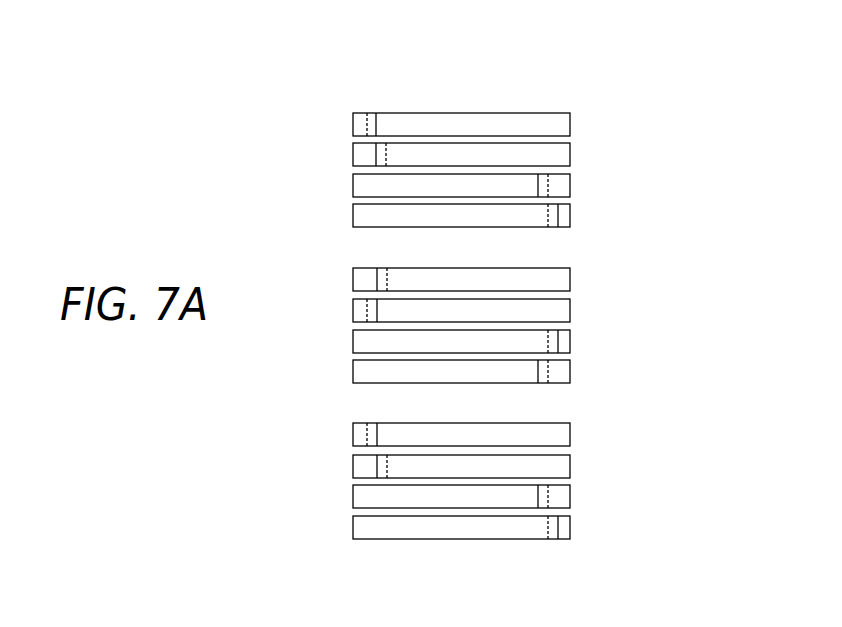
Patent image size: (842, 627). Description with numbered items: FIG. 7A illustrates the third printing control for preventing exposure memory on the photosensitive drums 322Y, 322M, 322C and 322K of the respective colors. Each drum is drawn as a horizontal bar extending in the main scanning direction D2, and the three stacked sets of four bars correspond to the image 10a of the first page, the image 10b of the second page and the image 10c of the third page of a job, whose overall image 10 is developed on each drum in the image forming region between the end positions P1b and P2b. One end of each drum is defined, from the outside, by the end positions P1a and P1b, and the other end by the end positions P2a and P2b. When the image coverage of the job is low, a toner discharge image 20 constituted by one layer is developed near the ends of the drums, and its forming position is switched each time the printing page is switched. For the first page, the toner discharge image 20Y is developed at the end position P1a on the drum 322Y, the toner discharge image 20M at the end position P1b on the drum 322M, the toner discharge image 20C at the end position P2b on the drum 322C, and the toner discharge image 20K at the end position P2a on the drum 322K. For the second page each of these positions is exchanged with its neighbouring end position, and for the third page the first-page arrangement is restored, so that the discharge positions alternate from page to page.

The image 10 is at (559, 326).
The image of the first page 10a is at (678, 108).
The image of the second page 10b is at (678, 267).
The image of the third page 10c is at (678, 417).
The toner discharge image 20 is at (512, 216).
The toner discharge image of the Y color 20Y is at (372, 124).
The toner discharge image of the M color 20M is at (374, 155).
The toner discharge image of the C color 20C is at (545, 186).
The toner discharge image of the K color 20K is at (548, 216).
The photosensitive drum of the Y color 322Y is at (465, 280).
The photosensitive drum of the M color 322M is at (467, 311).
The photosensitive drum of the C color 322C is at (456, 342).
The photosensitive drum of the K color 322K is at (460, 372).
The end position P1a is at (370, 109).
The end position P1b is at (383, 109).
The end position P2a is at (554, 109).
The end position P2b is at (542, 109).
The main scanning direction D2 is at (388, 573).